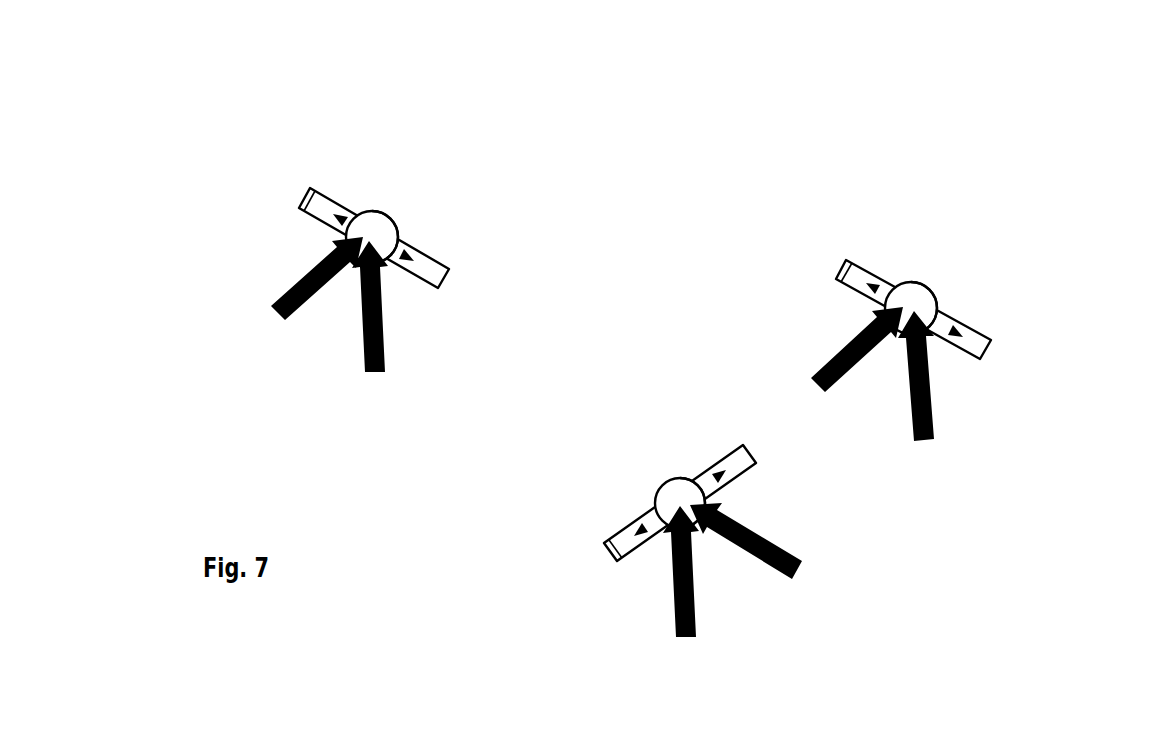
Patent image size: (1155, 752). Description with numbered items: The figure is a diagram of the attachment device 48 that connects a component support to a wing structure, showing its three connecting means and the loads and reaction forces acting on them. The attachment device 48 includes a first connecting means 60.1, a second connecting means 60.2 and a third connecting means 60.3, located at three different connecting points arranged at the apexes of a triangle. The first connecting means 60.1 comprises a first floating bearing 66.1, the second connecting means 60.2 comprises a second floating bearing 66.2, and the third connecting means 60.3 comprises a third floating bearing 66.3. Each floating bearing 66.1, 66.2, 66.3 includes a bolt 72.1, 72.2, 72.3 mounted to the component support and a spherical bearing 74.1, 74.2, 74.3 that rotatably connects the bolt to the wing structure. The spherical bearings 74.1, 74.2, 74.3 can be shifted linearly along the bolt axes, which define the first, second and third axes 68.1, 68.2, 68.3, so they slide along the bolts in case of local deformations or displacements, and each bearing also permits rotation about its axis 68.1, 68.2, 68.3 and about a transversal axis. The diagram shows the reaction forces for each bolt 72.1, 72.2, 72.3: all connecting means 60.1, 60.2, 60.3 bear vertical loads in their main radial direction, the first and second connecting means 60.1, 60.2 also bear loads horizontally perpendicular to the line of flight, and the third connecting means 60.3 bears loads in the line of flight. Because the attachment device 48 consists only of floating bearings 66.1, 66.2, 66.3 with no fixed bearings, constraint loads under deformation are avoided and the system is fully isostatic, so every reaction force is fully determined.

The attachment device 48 is at (392, 602).
The first connecting means 60.1 is at (378, 202).
The second connecting means 60.2 is at (962, 285).
The third connecting means 60.3 is at (646, 541).
The first floating bearing 66.1 is at (470, 173).
The second floating bearing 66.2 is at (1007, 233).
The third floating bearing 66.3 is at (597, 530).
The first axis 68.1 is at (397, 245).
The second axis 68.2 is at (892, 292).
The third axis 68.3 is at (705, 493).
The first bolt 72.1 is at (307, 210).
The second bolt 72.2 is at (978, 342).
The third bolt 72.3 is at (613, 560).
The first spherical bearing 74.1 is at (367, 215).
The second spherical bearing 74.2 is at (908, 283).
The third spherical bearing 74.3 is at (670, 488).